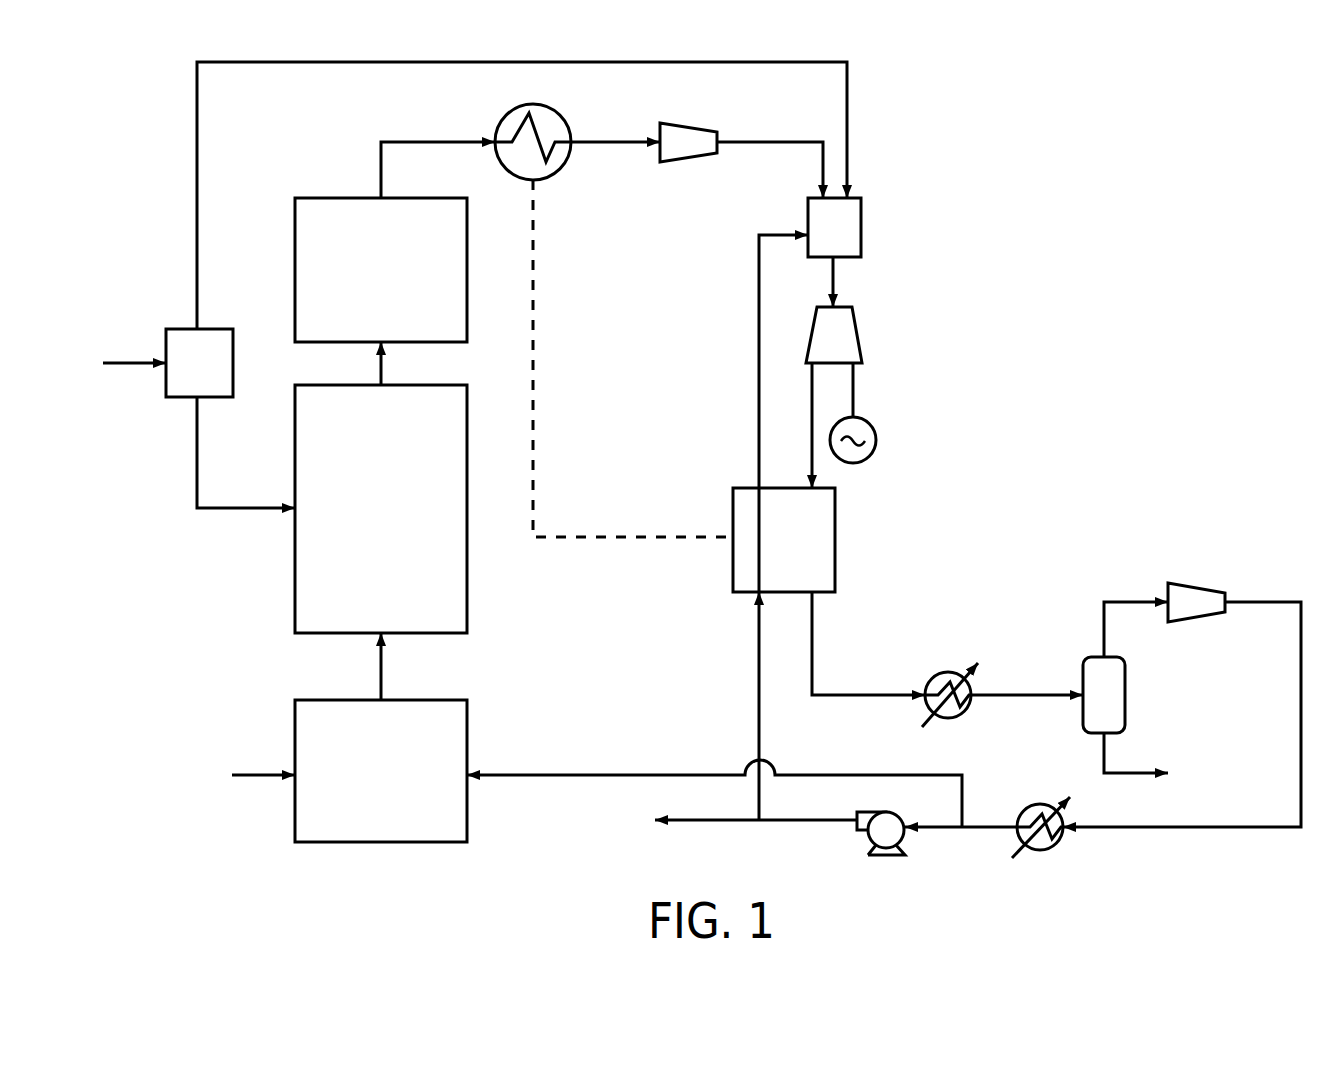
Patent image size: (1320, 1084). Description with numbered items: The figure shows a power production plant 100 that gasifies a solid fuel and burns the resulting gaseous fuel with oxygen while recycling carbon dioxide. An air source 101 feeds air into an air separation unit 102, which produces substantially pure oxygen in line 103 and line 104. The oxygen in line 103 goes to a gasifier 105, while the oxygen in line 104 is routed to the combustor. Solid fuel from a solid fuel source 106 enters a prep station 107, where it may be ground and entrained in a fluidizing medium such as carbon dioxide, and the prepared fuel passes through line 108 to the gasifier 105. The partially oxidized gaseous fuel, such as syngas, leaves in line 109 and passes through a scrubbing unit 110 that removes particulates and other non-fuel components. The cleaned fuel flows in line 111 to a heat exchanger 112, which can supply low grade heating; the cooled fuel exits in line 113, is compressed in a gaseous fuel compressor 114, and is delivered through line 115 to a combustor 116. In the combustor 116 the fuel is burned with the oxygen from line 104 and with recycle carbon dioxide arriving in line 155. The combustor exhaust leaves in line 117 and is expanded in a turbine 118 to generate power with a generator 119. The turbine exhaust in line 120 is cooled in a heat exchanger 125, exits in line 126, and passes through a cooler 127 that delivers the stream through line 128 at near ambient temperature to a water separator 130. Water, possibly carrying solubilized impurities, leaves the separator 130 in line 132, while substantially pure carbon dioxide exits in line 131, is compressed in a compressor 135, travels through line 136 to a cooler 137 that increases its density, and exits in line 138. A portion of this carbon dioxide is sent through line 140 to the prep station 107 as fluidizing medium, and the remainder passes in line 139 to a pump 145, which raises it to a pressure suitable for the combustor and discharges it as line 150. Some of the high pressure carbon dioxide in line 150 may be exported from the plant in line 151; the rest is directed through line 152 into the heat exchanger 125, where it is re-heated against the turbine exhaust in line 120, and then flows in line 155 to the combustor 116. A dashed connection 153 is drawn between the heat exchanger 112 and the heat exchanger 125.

The power production plant 100 is at (1033, 193).
The air source 101 is at (134, 352).
The air separation unit 102 is at (211, 329).
The line 103 is at (246, 452).
The line 104 is at (522, 195).
The gasifier 105 is at (467, 596).
The solid fuel source 106 is at (263, 763).
The prep station 107 is at (467, 730).
The line 108 is at (402, 666).
The line 109 is at (402, 363).
The scrubbing unit 110 is at (295, 218).
The line 111 is at (438, 159).
The heat exchanger 112 is at (556, 171).
The line 113 is at (615, 132).
The gaseous fuel compressor 114 is at (674, 162).
The line 115 is at (770, 159).
The combustor 116 is at (861, 238).
The line 117 is at (855, 282).
The turbine 118 is at (860, 350).
The generator 119 is at (874, 445).
The line 120 is at (794, 425).
The heat exchanger 125 is at (835, 566).
The line 126 is at (868, 643).
The cooler 127 is at (962, 713).
The line 128 is at (1027, 683).
The water separator 130 is at (1125, 712).
The line 131 is at (1136, 629).
The line 132 is at (1136, 754).
The compressor 135 is at (1190, 583).
The line 136 is at (1182, 716).
The cooler 137 is at (1056, 847).
The line 138 is at (989, 820).
The line 139 is at (933, 820).
The line 140 is at (714, 788).
The pump 145 is at (900, 855).
The line 150 is at (808, 808).
The line 151 is at (707, 808).
The line 152 is at (739, 706).
The heat transfer connection 153 is at (633, 358).
The line 155 is at (782, 402).